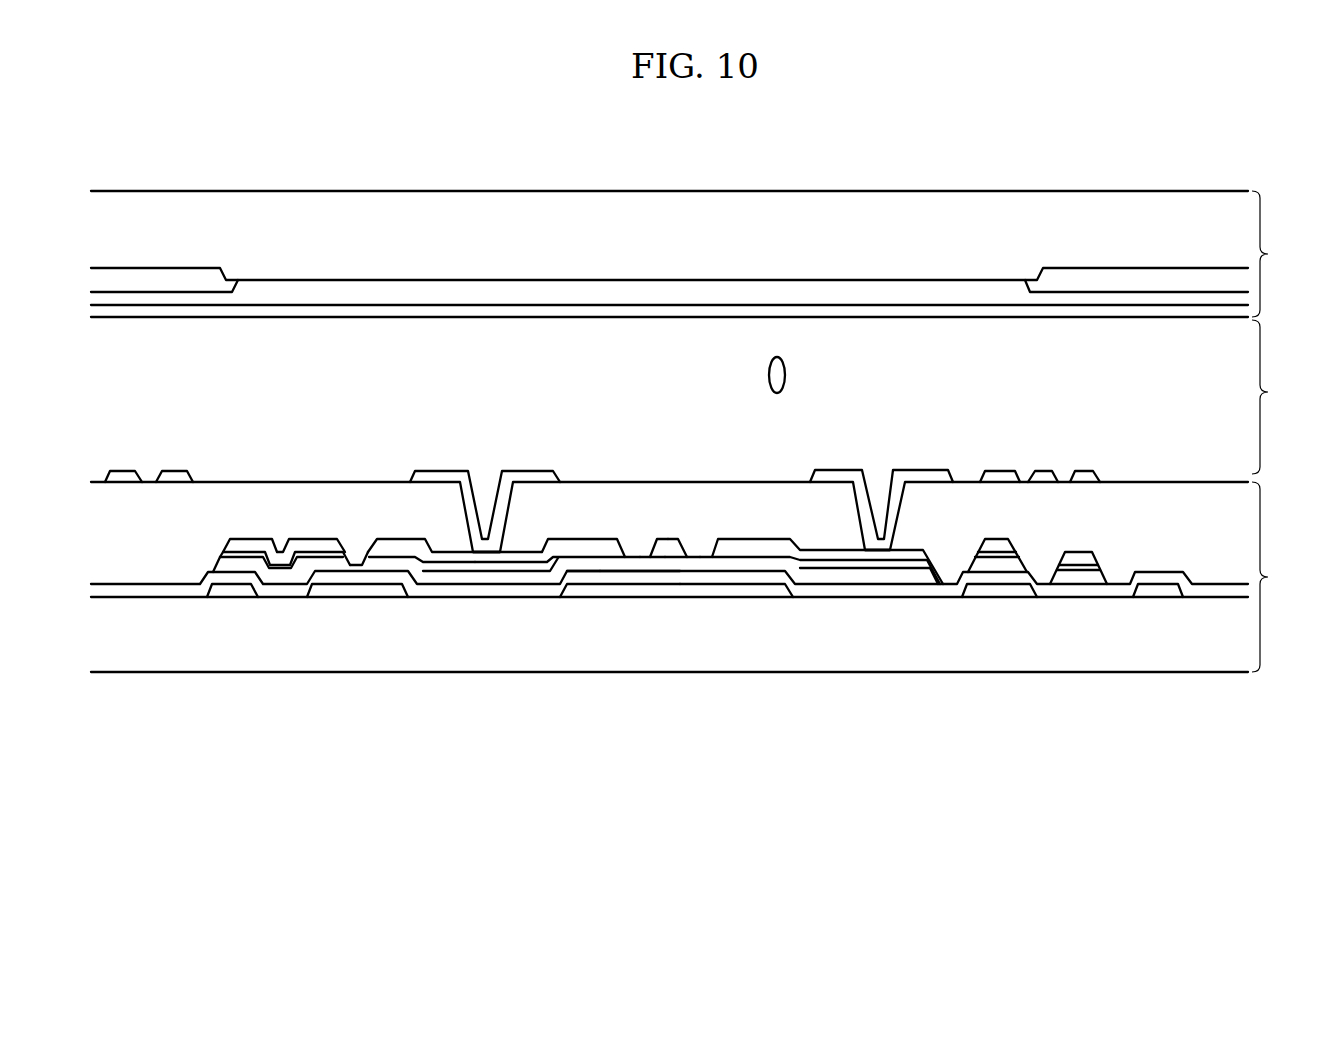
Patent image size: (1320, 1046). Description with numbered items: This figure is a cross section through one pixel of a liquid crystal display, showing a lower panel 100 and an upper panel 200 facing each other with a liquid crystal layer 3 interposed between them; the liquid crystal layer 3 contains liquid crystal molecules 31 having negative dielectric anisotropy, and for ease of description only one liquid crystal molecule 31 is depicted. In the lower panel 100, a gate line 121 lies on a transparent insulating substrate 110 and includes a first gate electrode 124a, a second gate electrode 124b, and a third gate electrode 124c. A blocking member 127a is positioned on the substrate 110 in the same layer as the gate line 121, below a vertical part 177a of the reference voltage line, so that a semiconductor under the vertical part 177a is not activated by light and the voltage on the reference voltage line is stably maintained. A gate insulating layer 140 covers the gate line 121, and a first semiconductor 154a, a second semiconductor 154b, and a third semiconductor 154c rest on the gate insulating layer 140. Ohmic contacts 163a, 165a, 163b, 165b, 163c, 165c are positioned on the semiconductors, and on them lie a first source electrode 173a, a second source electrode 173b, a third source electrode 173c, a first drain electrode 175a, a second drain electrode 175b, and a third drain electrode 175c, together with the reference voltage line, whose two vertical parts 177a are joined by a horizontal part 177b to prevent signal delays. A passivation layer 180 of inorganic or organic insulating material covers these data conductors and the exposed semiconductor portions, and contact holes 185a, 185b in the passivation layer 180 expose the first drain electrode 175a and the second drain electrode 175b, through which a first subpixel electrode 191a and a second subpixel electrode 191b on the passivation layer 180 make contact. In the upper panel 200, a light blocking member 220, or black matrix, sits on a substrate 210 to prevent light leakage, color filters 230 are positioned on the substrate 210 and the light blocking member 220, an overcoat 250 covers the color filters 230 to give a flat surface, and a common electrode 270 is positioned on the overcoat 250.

The substrate 210 is at (597, 207).
The light blocking member 220 is at (722, 272).
The color filter 230 is at (175, 275).
The overcoat 250 is at (460, 290).
The common electrode 270 is at (330, 310).
The upper panel 200 is at (1279, 254).
The liquid crystal layer 3 is at (1269, 397).
The liquid crystal molecule 31 is at (786, 373).
The lower panel 100 is at (1280, 577).
The substrate 110 is at (878, 650).
The gate line 121 is at (1158, 590).
The first gate electrode 124a is at (747, 590).
The second gate electrode 124b is at (598, 590).
The third gate electrode 124c is at (357, 590).
The blocking member 127a is at (232, 590).
The gate insulating layer 140 is at (150, 590).
The first semiconductor 154a is at (708, 566).
The second semiconductor 154b is at (632, 566).
The third semiconductor 154c is at (388, 566).
The ohmic contact 163a is at (683, 556).
The ohmic contact 163b is at (650, 566).
The ohmic contact 163c is at (458, 568).
The ohmic contact 165a is at (775, 562).
The ohmic contact 165b is at (585, 556).
The ohmic contact 165c is at (327, 562).
The first source electrode 173a is at (682, 541).
The second source electrode 173b is at (658, 541).
The third source electrode 173c is at (388, 547).
The first drain electrode 175a is at (762, 548).
The second drain electrode 175b is at (576, 548).
The third drain electrode 175c is at (318, 548).
The vertical part 177a is at (245, 547).
The horizontal part 177b is at (1080, 555).
The passivation layer 180 is at (1147, 506).
The contact hole 185a is at (876, 522).
The contact hole 185b is at (486, 522).
The first subpixel electrode 191a is at (175, 476).
The second subpixel electrode 191b is at (425, 476).